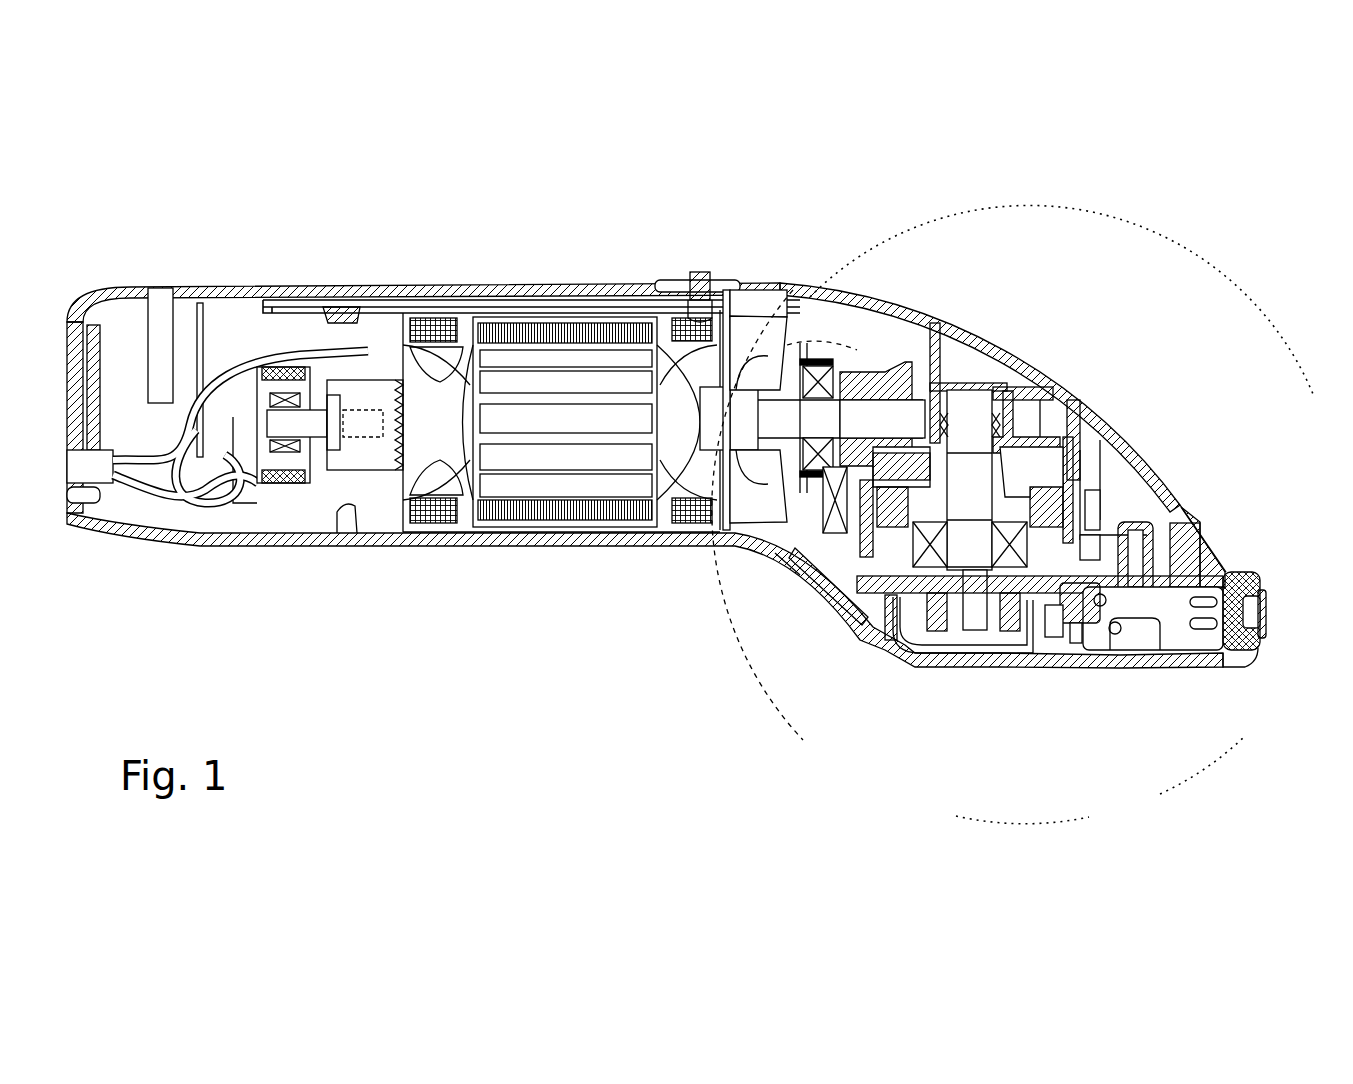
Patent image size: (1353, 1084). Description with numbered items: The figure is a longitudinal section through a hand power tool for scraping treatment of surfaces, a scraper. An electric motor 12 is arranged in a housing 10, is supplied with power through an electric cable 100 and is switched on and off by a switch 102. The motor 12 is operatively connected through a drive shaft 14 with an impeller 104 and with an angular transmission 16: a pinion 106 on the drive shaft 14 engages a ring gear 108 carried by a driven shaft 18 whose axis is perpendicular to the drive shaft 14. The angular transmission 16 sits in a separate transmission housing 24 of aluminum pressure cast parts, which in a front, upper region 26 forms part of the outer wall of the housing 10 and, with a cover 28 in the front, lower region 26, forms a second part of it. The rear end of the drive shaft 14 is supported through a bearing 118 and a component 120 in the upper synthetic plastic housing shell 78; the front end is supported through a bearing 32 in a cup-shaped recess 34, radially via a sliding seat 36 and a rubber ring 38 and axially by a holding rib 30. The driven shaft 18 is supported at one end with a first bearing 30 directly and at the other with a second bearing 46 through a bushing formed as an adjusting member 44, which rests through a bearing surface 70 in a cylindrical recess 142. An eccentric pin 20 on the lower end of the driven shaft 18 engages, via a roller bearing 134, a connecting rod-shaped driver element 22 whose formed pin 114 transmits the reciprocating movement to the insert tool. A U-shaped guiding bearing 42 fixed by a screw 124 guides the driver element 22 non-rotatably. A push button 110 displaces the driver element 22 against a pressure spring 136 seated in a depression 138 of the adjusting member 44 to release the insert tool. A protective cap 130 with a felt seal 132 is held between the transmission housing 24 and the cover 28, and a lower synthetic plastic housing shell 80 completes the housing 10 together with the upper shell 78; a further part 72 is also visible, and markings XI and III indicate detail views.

The housing 10 is at (860, 228).
The electric motor 12 is at (492, 312).
The drive shaft 14 is at (942, 378).
The angular transmission 16 is at (1090, 425).
The driven shaft 18 is at (1075, 477).
The eccentric pin 20 is at (1090, 543).
The driver element 22 is at (1080, 600).
The transmission housing 24 is at (1100, 522).
The front region 26 is at (1215, 785).
The cover 28 is at (1060, 657).
The holding rib 30 is at (990, 485).
The bearing 32 is at (850, 362).
The cup-shaped recess 34 is at (804, 350).
The sliding seat 36 is at (740, 540).
The rubber ring 38 is at (782, 482).
The guiding bearing 42 is at (1175, 622).
The adjusting member 44 is at (820, 568).
The second bearing 46 is at (890, 610).
The bearing surface 70 is at (847, 597).
The bolt 72 is at (1153, 532).
The upper housing shell 78 is at (315, 293).
The lower housing shell 80 is at (508, 540).
The electric cable 100 is at (233, 340).
The switch 102 is at (688, 278).
The impeller 104 is at (742, 328).
The pinion 106 is at (907, 372).
The ring gear 108 is at (1005, 392).
The push button 110 is at (988, 650).
The pin 114 is at (1075, 628).
The bearing 118 is at (288, 472).
The component 120 is at (308, 485).
The screw 124 is at (1263, 598).
The protective cap 130 is at (1240, 667).
The felt seal 132 is at (1253, 650).
The roller bearing 134 is at (960, 620).
The pressure spring 136 is at (895, 620).
The depression 138 is at (870, 600).
The cylindrical recess 142 is at (787, 553).
The detail XI is at (870, 338).
The detail III is at (1221, 272).